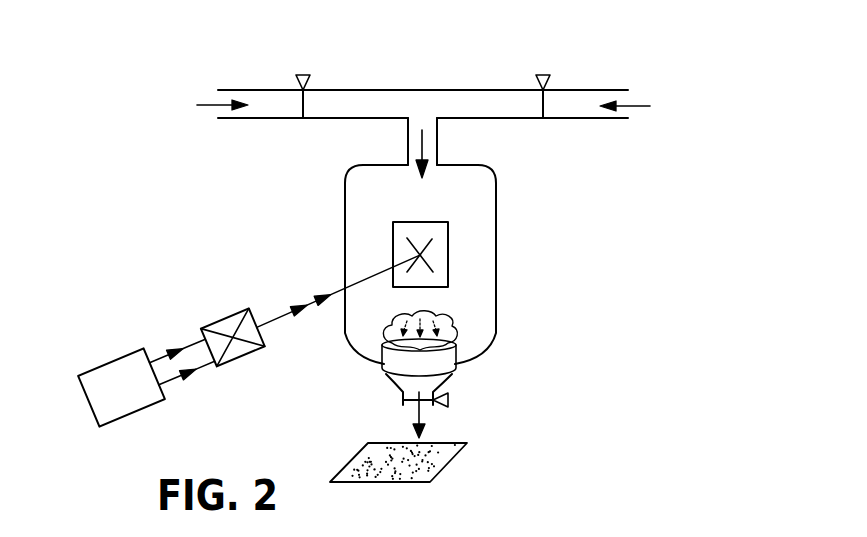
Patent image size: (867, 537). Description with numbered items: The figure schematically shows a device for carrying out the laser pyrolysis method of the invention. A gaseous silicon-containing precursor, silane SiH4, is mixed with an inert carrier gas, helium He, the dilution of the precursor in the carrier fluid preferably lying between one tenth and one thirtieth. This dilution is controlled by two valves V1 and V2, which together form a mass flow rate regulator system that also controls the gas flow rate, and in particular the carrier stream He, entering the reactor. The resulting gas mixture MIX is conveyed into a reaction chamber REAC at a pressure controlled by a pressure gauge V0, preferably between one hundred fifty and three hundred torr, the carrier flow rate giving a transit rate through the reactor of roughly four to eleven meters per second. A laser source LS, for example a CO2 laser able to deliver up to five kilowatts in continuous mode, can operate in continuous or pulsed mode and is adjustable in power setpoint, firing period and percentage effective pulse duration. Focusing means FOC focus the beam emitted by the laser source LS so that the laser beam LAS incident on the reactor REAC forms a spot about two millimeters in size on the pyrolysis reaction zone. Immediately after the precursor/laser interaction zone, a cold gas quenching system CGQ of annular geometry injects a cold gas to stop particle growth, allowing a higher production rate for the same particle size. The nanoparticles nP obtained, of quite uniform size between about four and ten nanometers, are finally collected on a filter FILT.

The silane SiH4 is at (188, 112).
The helium He is at (649, 107).
The valve V1 is at (302, 74).
The valve V2 is at (545, 74).
The gas mixture MIX is at (426, 148).
The reaction chamber REAC is at (440, 242).
The cold gas quenching system CGQ is at (390, 358).
The pressure gauge V0 is at (448, 400).
The nanoparticles nP is at (422, 414).
The filter FILT is at (358, 455).
The laser source LS is at (93, 375).
The focusing means FOC is at (229, 326).
The laser beam LAS is at (281, 315).